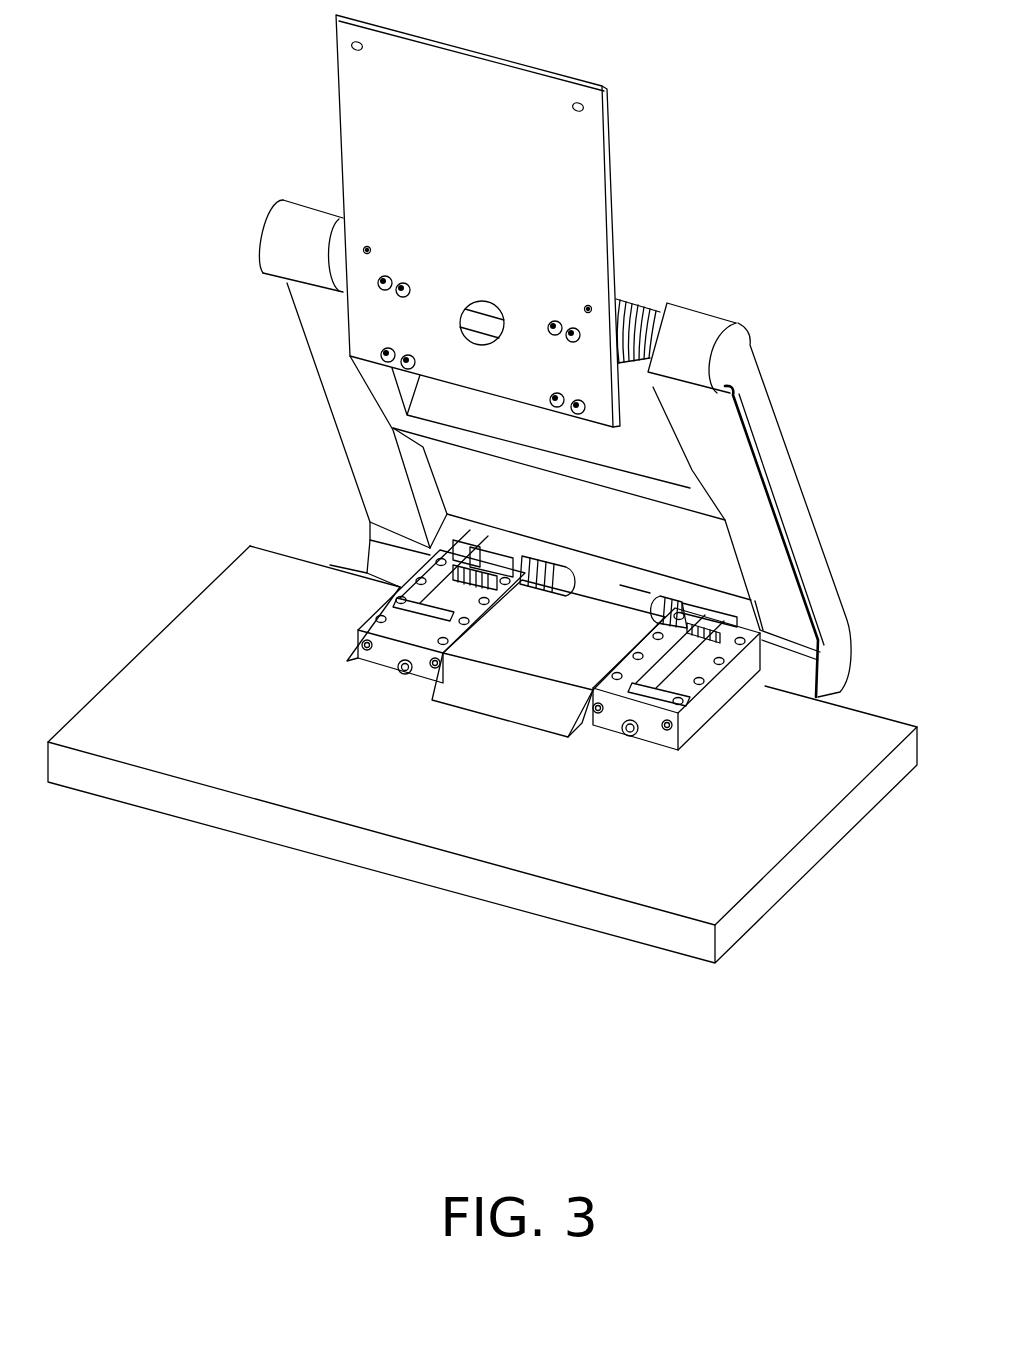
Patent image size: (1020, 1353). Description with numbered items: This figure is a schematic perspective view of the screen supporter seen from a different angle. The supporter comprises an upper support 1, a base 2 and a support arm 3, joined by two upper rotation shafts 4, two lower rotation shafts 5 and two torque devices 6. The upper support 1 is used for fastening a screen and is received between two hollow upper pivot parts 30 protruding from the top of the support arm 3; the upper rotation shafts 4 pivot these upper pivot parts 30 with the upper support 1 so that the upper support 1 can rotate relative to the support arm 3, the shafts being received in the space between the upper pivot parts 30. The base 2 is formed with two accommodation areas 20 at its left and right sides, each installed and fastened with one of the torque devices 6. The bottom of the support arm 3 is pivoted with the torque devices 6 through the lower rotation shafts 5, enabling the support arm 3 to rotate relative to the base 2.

The upper support 1 is at (575, 200).
The base 2 is at (245, 578).
The support arm 3 is at (345, 400).
The upper rotation shafts 4 is at (643, 293).
The lower rotation shafts 5 is at (588, 577).
The torque devices 6 is at (405, 668).
The accommodation areas 20 is at (353, 660).
The upper pivot parts 30 is at (275, 233).